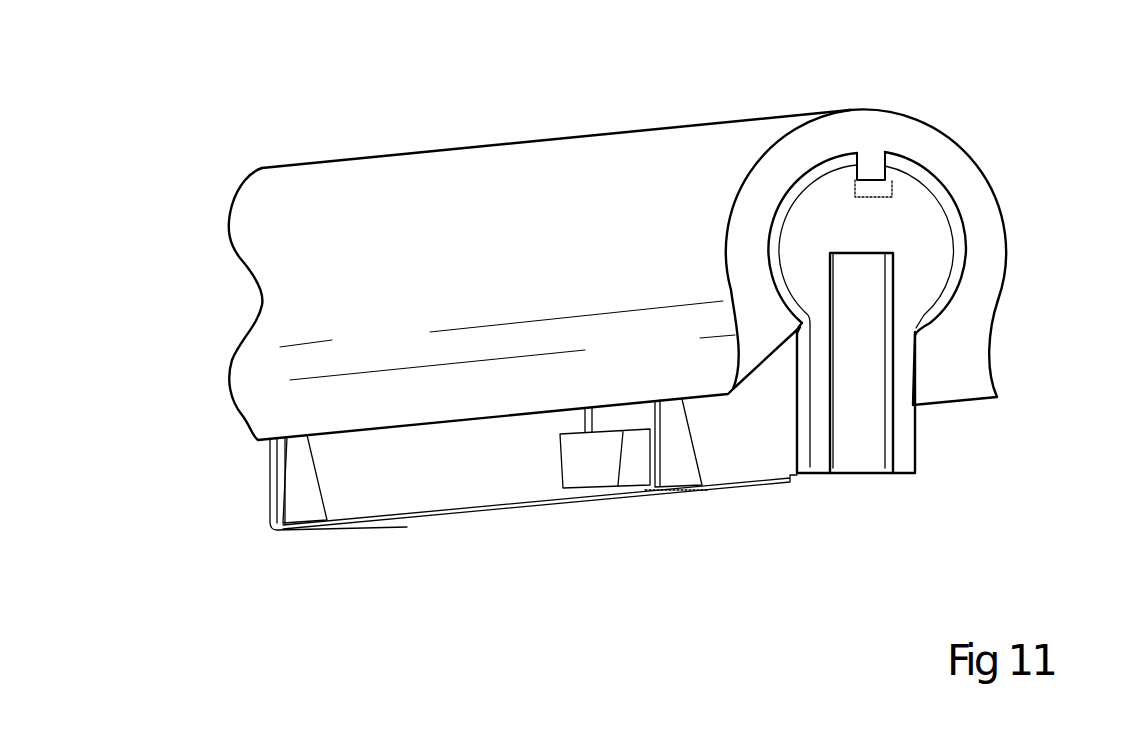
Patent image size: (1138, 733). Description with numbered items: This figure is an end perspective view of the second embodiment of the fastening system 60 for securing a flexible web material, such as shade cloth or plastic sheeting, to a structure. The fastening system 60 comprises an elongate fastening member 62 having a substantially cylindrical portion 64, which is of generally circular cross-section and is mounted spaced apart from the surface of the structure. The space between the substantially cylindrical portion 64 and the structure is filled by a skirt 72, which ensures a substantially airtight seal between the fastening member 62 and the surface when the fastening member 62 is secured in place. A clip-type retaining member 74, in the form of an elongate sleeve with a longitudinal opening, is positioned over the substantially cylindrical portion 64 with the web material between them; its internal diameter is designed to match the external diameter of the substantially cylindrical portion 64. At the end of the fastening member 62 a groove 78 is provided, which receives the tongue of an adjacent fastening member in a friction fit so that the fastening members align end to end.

The fastening system 60 is at (440, 128).
The clip-type retaining member 74 is at (600, 123).
The fastening member 62 is at (907, 170).
The substantially cylindrical portion 64 is at (917, 232).
The skirt 72 is at (480, 473).
The groove 78 is at (860, 445).